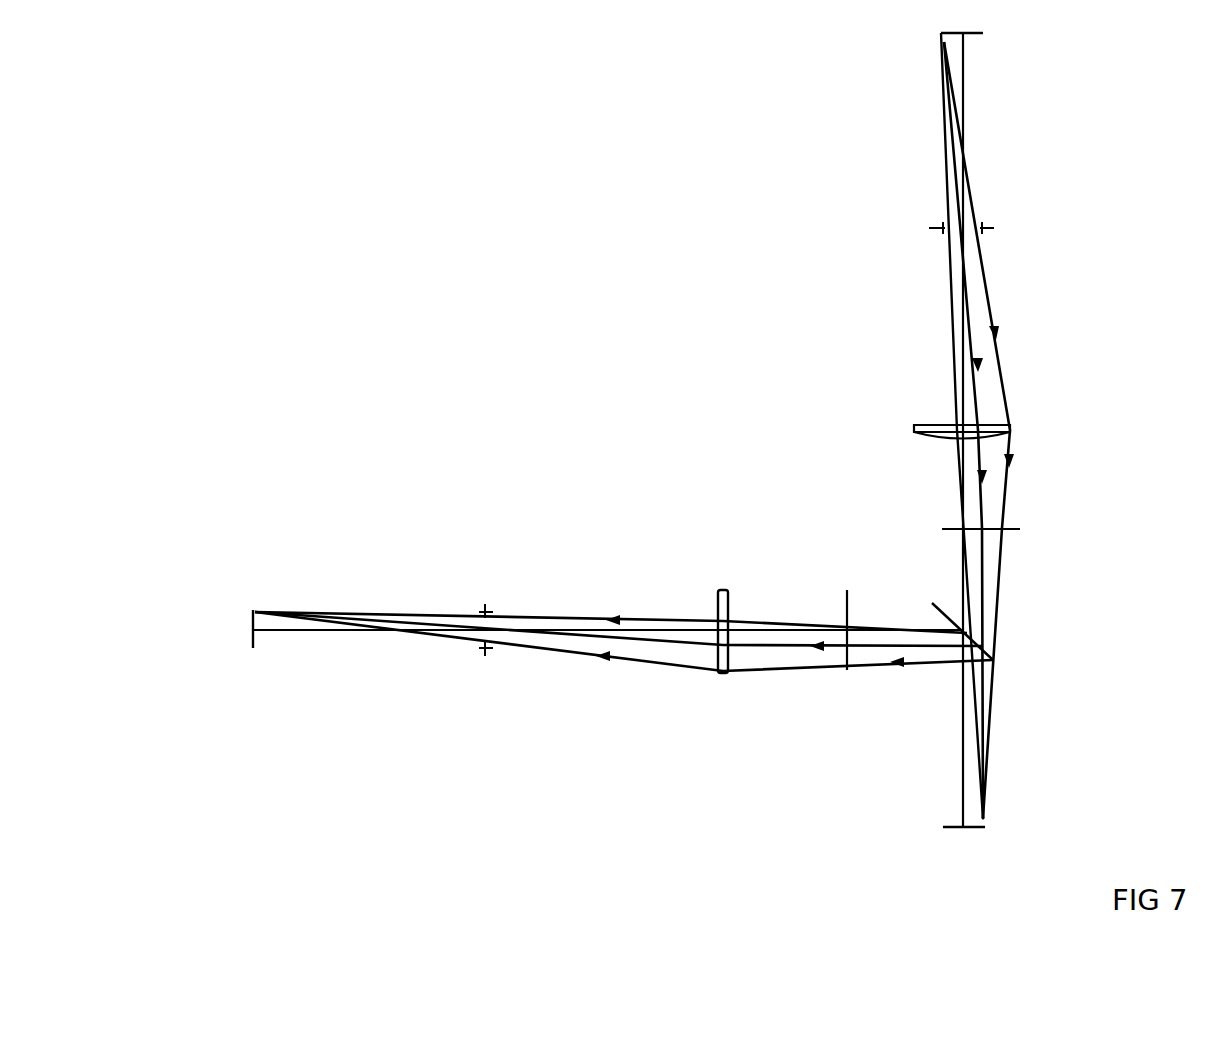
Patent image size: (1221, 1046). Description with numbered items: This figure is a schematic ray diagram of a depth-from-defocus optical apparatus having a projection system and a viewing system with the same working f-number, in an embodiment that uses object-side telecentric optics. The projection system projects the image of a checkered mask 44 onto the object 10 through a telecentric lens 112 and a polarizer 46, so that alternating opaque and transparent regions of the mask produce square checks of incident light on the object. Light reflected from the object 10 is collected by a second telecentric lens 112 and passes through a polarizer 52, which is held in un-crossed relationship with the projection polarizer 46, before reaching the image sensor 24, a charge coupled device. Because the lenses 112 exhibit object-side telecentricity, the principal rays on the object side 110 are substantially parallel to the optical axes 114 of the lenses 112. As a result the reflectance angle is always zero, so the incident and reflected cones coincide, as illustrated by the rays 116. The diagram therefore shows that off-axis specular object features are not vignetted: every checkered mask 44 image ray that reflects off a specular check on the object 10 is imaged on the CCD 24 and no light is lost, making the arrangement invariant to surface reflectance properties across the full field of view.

The object 10 is at (990, 819).
The image sensor 24 is at (253, 625).
The checkered mask 44 is at (977, 34).
The polarizer 46 is at (1012, 530).
The polarizer 52 is at (845, 606).
The object-side principal rays 110 is at (985, 515).
The telecentric lens 112 is at (924, 425).
The optical axis 114 is at (962, 765).
The rays 116 is at (978, 757).